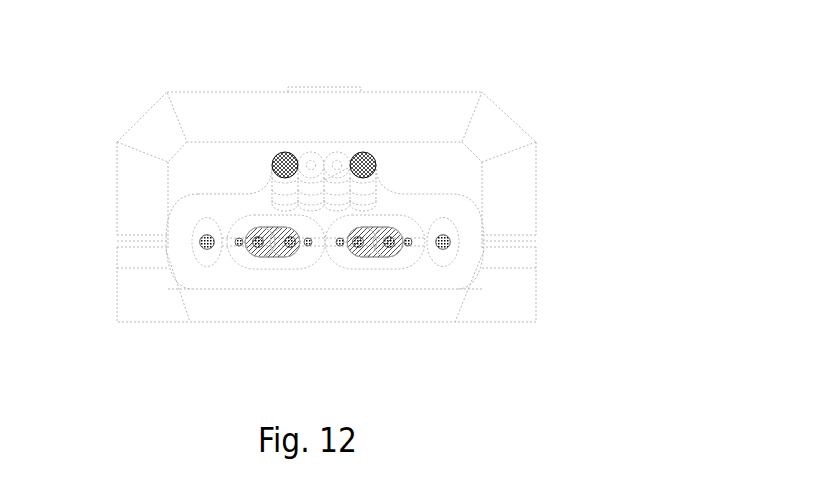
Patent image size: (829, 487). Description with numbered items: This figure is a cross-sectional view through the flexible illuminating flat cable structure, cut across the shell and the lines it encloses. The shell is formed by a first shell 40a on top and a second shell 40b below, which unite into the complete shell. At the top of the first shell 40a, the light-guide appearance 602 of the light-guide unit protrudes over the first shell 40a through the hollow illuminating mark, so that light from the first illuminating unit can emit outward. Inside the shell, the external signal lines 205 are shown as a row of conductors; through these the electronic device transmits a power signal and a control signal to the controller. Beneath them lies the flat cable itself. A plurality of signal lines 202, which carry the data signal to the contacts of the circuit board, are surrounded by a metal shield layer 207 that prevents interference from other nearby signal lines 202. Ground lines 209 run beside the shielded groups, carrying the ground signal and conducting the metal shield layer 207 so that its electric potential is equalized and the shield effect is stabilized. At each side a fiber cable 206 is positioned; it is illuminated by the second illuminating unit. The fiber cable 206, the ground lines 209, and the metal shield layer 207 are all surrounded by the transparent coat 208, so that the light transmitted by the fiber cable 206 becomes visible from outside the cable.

The first shell 40a is at (155, 135).
The second shell 40b is at (121, 305).
The light-guide appearance 602 is at (342, 88).
The external signal lines 205 is at (286, 162).
The metal shield layer 207 is at (257, 230).
The fiber cable 206 is at (201, 245).
The signal lines 202 is at (255, 244).
The transparent coat 208 is at (291, 257).
The ground lines 209 is at (310, 245).